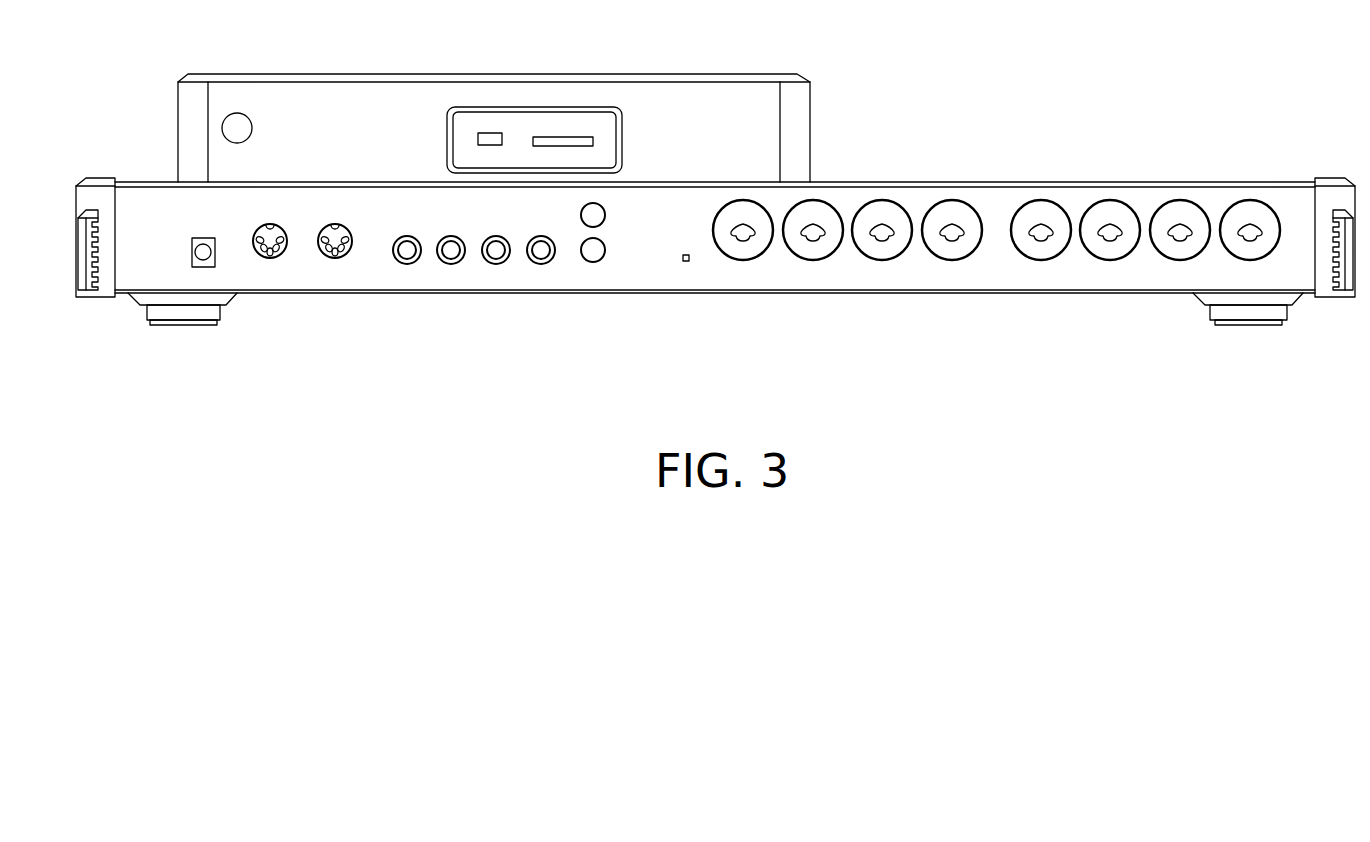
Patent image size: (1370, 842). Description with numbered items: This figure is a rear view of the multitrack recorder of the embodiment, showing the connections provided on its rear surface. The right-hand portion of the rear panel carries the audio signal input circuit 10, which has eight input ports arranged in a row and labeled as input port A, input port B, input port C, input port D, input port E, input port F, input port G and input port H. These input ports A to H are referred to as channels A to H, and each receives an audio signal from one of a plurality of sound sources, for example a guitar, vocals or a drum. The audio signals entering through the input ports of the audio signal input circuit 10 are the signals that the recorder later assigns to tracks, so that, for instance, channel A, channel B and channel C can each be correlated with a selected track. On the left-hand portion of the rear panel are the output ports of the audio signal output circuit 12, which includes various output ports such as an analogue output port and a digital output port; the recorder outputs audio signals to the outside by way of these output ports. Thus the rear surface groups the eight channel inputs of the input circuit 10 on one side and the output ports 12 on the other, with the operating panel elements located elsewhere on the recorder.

The audio signal input circuit 10 is at (1270, 60).
The audio signal output circuit 12 is at (617, 317).
The input port A is at (1260, 200).
The input port B is at (1190, 200).
The input port C is at (1120, 200).
The input port D is at (1051, 200).
The input port E is at (960, 198).
The input port F is at (884, 198).
The input port G is at (815, 262).
The input port H is at (745, 262).